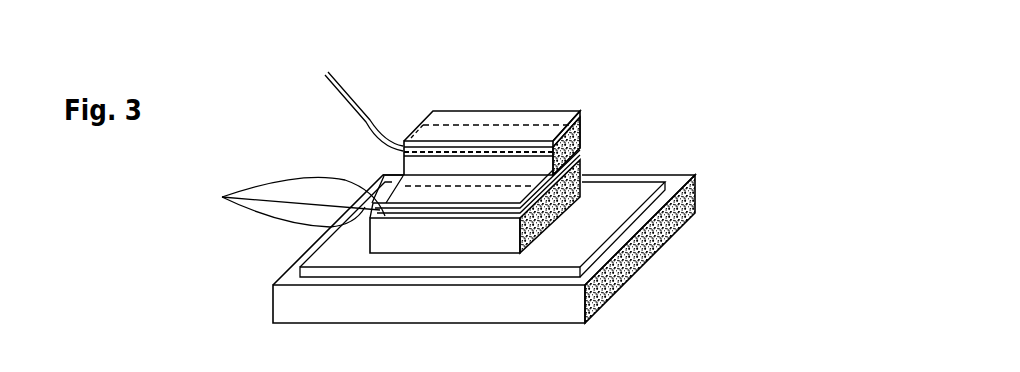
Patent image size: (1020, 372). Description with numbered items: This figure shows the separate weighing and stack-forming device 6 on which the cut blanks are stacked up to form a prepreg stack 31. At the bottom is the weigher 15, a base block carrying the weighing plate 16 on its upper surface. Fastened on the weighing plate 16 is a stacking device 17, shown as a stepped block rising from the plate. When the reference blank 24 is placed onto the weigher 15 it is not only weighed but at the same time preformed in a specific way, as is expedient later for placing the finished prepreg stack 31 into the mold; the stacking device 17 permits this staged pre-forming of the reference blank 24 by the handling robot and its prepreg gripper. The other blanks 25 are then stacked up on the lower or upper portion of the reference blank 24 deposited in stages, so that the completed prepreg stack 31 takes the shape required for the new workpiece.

The weighing and stack-forming device 6 is at (683, 163).
The weigher 15 is at (632, 273).
The weighing plate 16 is at (607, 197).
The stacking device 17 is at (543, 213).
The reference blank 24 is at (417, 163).
The other blanks 25 is at (295, 137).
The prepreg stack 31 is at (525, 111).